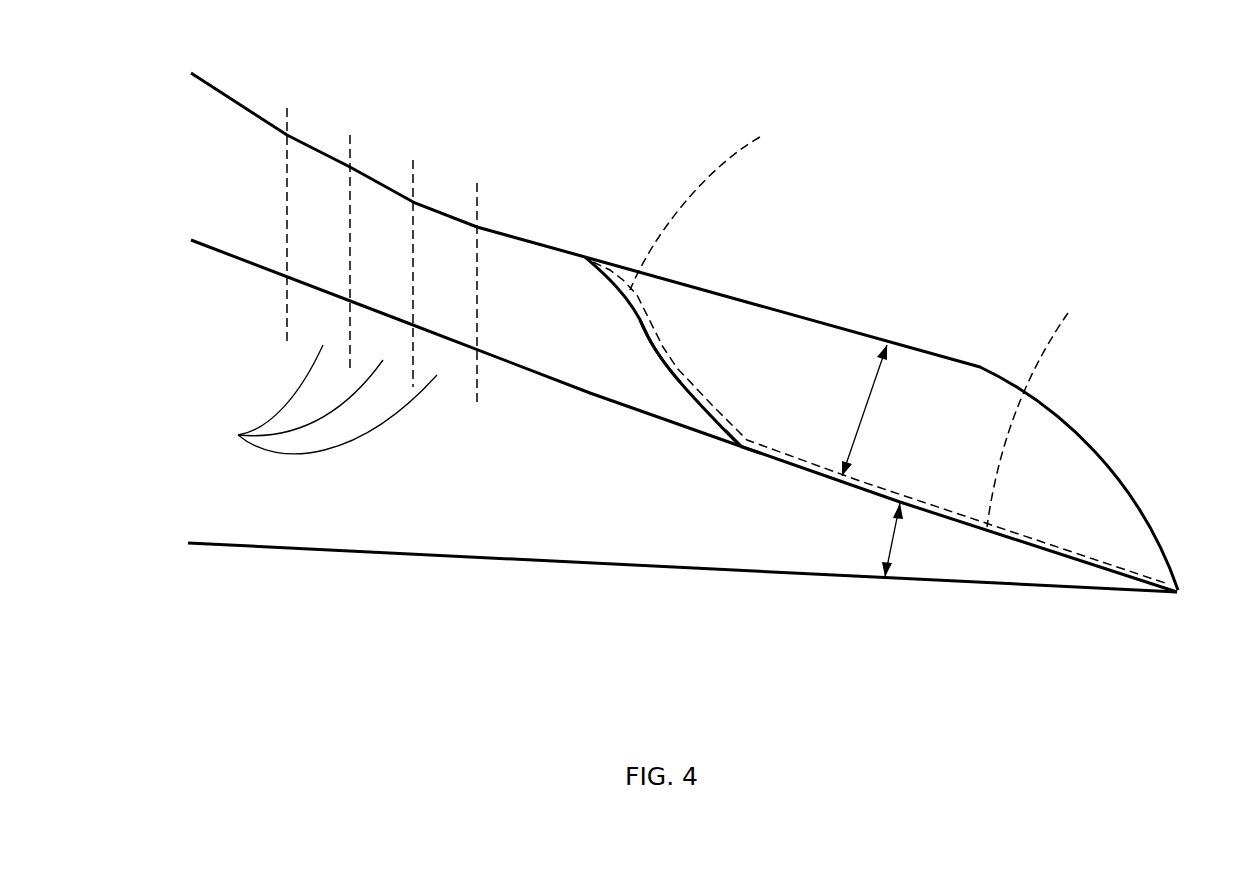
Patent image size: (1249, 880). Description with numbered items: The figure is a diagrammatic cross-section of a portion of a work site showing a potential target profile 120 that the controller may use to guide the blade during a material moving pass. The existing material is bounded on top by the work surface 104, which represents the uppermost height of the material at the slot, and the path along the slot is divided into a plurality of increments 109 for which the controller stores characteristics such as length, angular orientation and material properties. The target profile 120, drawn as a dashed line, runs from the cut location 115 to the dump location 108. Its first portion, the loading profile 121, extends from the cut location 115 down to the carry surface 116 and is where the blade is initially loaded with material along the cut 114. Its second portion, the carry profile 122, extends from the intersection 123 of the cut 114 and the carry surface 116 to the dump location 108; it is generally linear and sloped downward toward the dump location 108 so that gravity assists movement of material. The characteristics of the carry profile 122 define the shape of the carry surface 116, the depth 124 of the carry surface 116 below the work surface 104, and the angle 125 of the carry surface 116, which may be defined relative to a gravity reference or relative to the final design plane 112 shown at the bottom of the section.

The work surface 104 is at (323, 147).
The dump location 108 is at (1143, 465).
The carry surface 116 is at (242, 260).
The final design plane 112 is at (332, 547).
The increments 109 is at (312, 399).
The cut location 115 is at (585, 257).
The loading profile 121 is at (880, 351).
The cut 114 is at (653, 355).
The intersection 123 is at (742, 447).
The target profile 120 is at (790, 358).
The depth of the carry surface 124 is at (865, 410).
The angle of the carry surface 125 is at (887, 538).
The carry profile 122 is at (1038, 406).